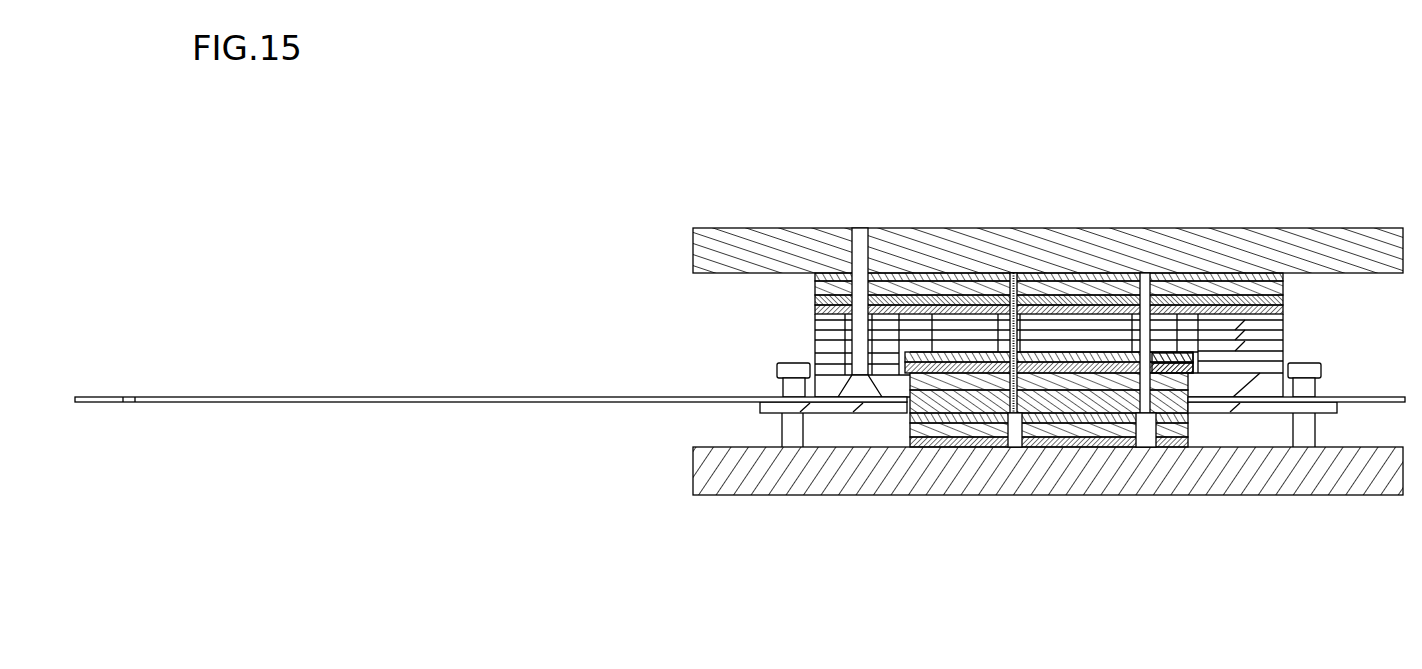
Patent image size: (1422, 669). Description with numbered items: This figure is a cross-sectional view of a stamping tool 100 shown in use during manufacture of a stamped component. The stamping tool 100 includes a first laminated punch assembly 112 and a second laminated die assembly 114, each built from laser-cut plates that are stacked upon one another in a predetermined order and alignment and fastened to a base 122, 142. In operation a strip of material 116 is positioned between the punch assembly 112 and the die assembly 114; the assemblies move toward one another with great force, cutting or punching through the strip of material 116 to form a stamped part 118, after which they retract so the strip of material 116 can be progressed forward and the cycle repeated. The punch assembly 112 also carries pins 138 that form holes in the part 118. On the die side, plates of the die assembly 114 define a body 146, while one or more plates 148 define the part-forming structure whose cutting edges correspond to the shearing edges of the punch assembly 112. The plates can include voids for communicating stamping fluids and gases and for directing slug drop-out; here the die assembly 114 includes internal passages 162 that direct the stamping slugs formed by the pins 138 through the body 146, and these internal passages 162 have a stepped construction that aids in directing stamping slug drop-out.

The stamping tool 100 is at (742, 360).
The laminated punch assembly 112 is at (776, 312).
The laminated die assembly 114 is at (1085, 455).
The strip of material 116 is at (448, 396).
The stamped part 118 is at (925, 370).
The base 122 is at (1076, 227).
The pins 138 is at (1005, 300).
The base 142 is at (1170, 496).
The body 146 is at (900, 432).
The plates 148 is at (928, 448).
The internal passages 162 is at (1004, 428).